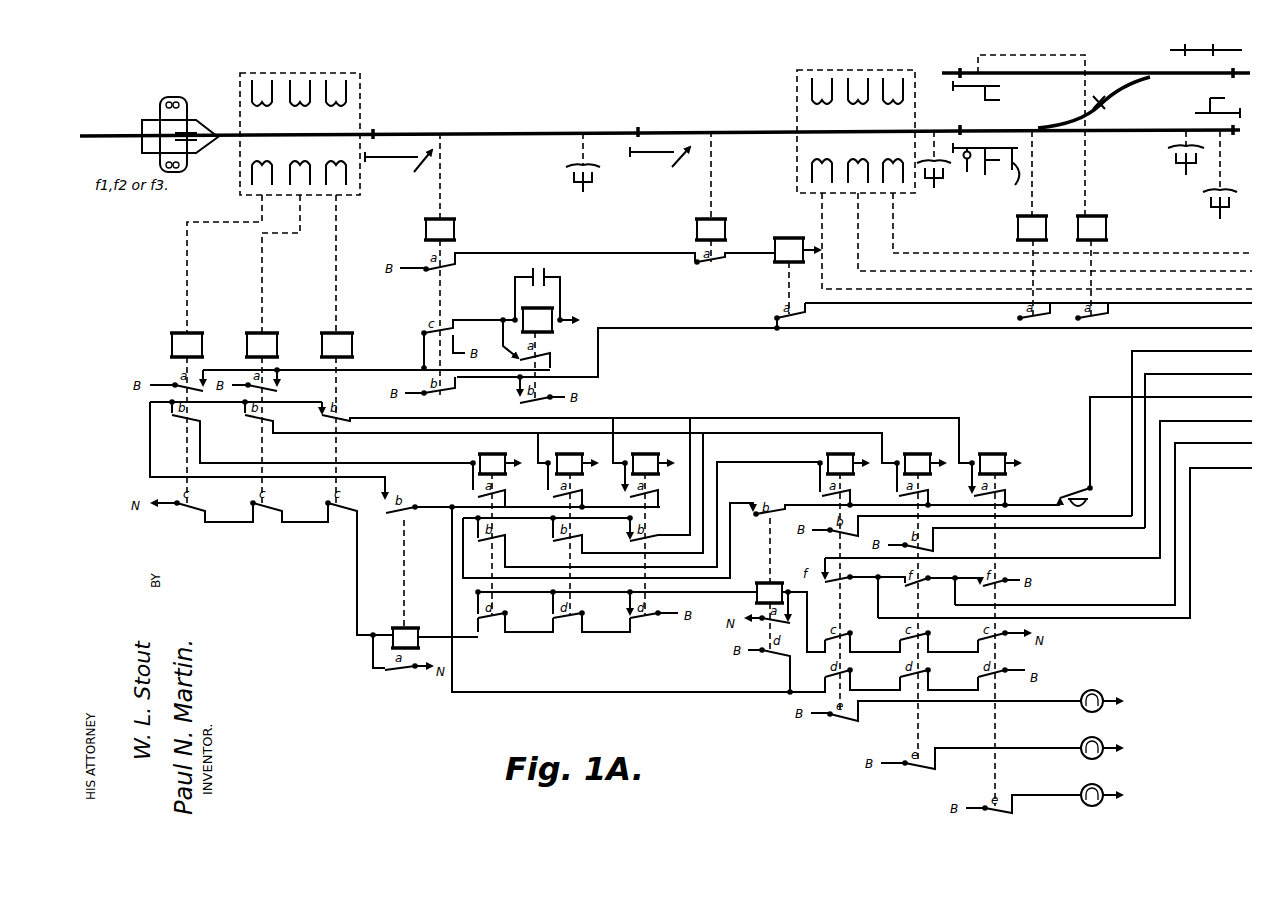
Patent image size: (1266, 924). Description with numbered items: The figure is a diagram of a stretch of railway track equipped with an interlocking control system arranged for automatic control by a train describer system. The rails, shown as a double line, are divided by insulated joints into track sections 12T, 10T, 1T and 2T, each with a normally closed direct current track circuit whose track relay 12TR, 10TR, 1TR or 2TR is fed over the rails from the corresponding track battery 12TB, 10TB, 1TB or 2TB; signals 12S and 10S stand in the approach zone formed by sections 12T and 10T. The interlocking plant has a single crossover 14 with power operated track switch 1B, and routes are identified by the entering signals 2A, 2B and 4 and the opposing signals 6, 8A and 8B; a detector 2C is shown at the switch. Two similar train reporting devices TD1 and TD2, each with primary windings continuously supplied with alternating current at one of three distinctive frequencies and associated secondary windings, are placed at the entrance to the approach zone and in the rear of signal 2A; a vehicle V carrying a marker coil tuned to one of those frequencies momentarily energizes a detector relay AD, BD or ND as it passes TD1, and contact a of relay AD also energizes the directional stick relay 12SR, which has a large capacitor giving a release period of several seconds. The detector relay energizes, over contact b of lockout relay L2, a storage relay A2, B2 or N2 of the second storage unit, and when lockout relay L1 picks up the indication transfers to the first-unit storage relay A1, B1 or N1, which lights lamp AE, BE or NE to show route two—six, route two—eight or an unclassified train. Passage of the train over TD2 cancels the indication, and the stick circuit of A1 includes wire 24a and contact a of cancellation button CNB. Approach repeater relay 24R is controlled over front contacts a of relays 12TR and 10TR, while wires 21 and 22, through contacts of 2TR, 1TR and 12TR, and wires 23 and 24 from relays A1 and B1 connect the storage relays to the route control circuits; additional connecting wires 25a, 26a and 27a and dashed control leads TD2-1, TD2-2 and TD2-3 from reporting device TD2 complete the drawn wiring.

The vehicle V is at (160, 115).
The train reporting device TD1 is at (360, 86).
The train reporting device TD2 is at (797, 97).
The track section 12T is at (360, 125).
The track section 10T is at (799, 124).
The track section 1T is at (1100, 139).
The track section 2T is at (1096, 66).
The signal 12S is at (398, 167).
The signal 10S is at (660, 163).
The track battery 12TB is at (577, 174).
The track battery 10TB is at (927, 173).
The track battery 1TB is at (1202, 188).
The track battery 2TB is at (1184, 176).
The track relay 12TR is at (435, 264).
The track relay 10TR is at (708, 196).
The track relay 1TR is at (1030, 257).
The track relay 2TR is at (1090, 257).
The repeater relay 24R is at (795, 267).
The directional stick relay 12SR is at (546, 334).
The entering signal 2A is at (1015, 185).
The entering signal 2B is at (998, 169).
The switch detector contact 2C is at (985, 167).
The track switch turnout 14 is at (1088, 102).
The power operated track switch 1B is at (1123, 97).
The entering signal 4 is at (976, 94).
The signal 6 is at (1217, 107).
The signal 8A is at (1177, 47).
The signal 8B is at (1223, 47).
The detector relay AD is at (184, 336).
The detector relay BD is at (260, 336).
The detector relay ND is at (335, 336).
The storage relay A2 is at (504, 525).
The storage relay B2 is at (581, 525).
The storage relay N2 is at (657, 525).
The indication storage relay A1 is at (848, 573).
The indication storage relay B1 is at (926, 597).
The indication storage relay N1 is at (1003, 620).
The lockout relay L1 is at (769, 568).
The lockout relay L2 is at (434, 562).
The cancellation button CNB is at (1066, 481).
The lamp AE is at (1105, 692).
The lamp BE is at (1105, 739).
The lamp NE is at (1105, 786).
The wire 21 is at (1028, 296).
The wire 22 is at (854, 345).
The wire 23 is at (1192, 426).
The wire 24 is at (1198, 444).
The wire 24a is at (1171, 435).
The wire 25a is at (1038, 482).
The wire 26a is at (1103, 517).
The wire 27a is at (1065, 536).
The control wire TD2-1 is at (1037, 241).
The control wire TD2-2 is at (1055, 232).
The control wire TD2-3 is at (1072, 223).